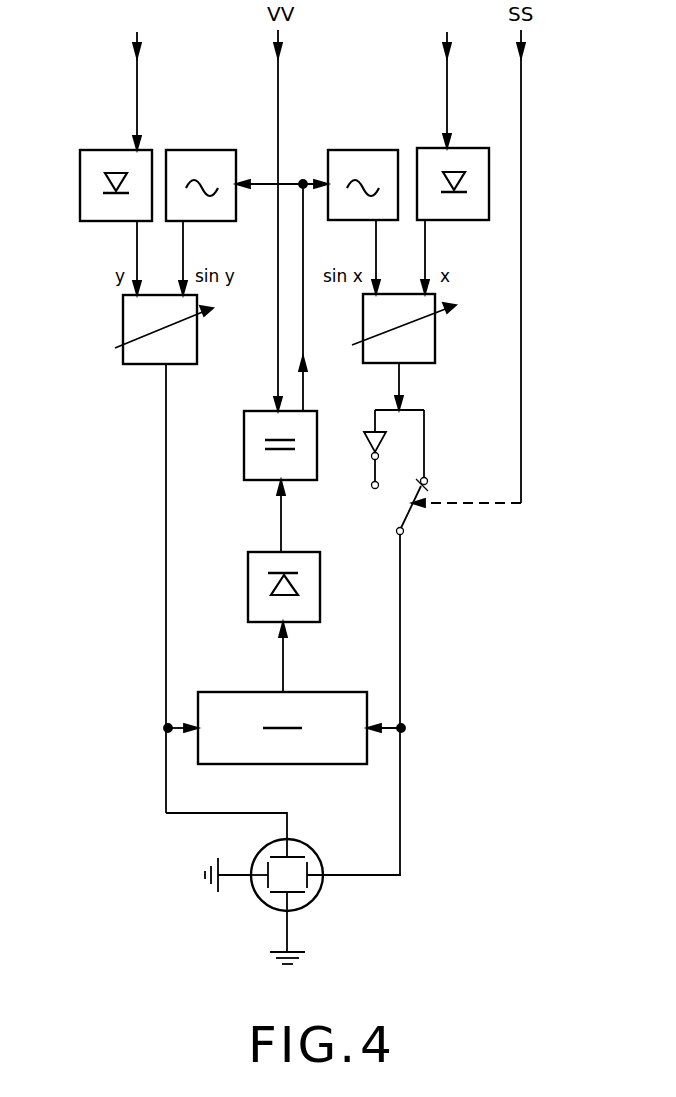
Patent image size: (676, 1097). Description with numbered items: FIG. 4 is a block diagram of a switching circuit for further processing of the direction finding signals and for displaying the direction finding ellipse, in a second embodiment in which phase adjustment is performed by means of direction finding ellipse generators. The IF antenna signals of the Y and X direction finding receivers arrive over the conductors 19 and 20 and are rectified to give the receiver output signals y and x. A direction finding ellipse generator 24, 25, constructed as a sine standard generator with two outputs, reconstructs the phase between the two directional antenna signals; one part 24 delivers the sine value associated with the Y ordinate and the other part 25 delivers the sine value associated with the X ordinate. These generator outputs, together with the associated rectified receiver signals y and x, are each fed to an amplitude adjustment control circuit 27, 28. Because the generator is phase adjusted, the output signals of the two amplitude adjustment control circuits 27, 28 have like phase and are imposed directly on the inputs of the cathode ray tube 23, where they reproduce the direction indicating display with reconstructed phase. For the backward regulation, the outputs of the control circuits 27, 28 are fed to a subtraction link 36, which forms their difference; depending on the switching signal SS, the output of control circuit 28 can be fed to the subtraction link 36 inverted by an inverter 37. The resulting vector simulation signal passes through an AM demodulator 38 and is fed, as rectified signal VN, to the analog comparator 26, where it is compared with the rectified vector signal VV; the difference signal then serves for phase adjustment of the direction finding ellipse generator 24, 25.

The conductor 19 is at (137, 95).
The conductor 20 is at (447, 88).
The cathode ray tube 23 is at (312, 895).
The direction finding ellipse generator part 24 is at (222, 150).
The direction finding ellipse generator part 25 is at (363, 150).
The analog comparator 26 is at (244, 468).
The amplitude adjustment control circuit 27 is at (125, 364).
The amplitude adjustment control circuit 28 is at (435, 363).
The subtraction link 36 is at (330, 692).
The inverter 37 is at (365, 445).
The AM demodulator 38 is at (248, 608).